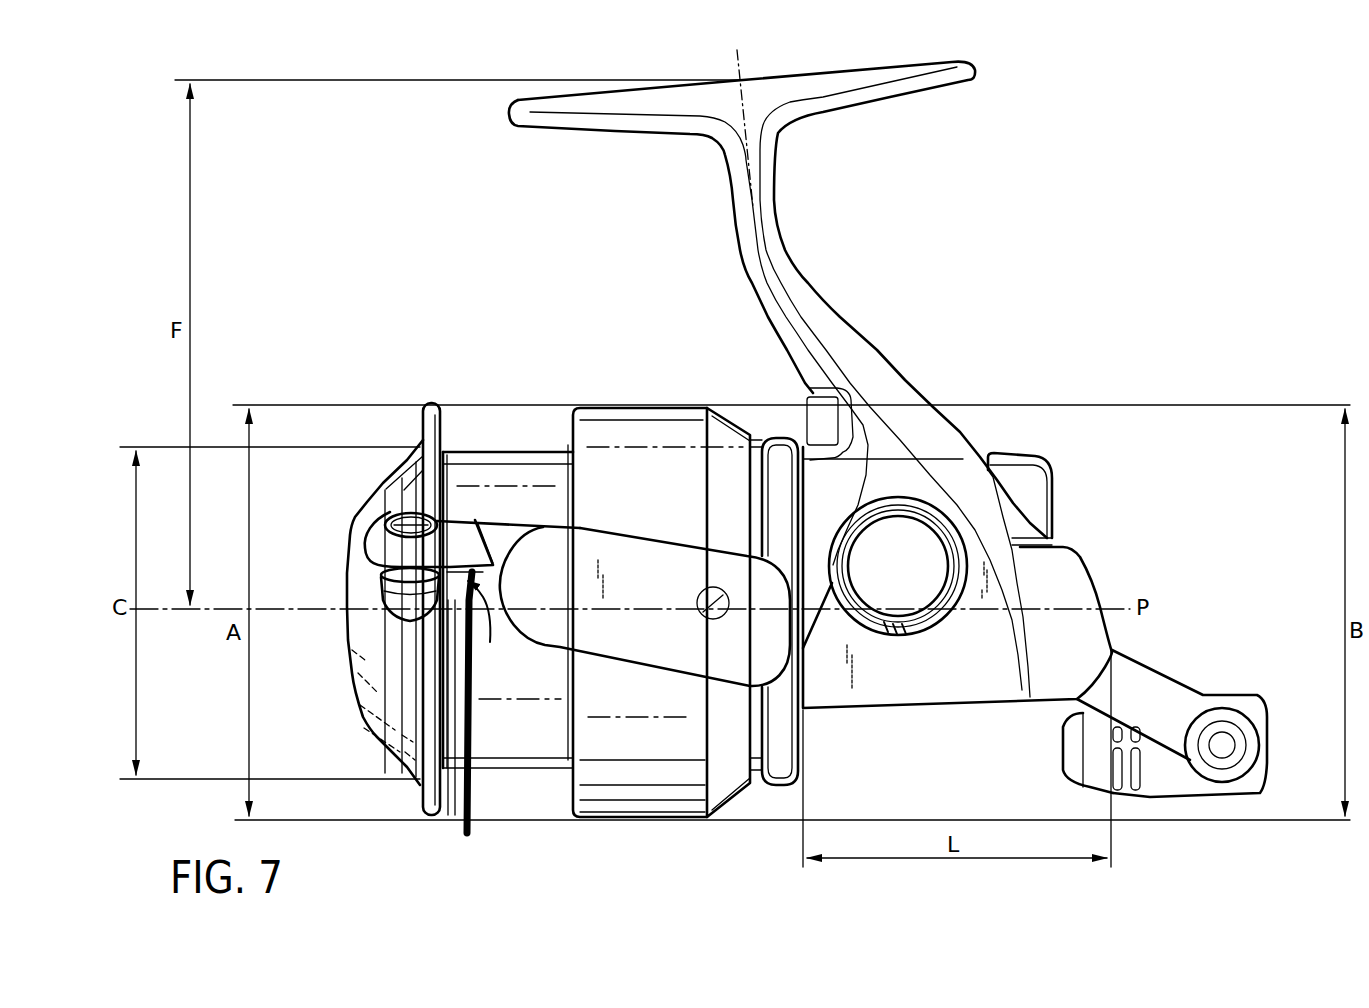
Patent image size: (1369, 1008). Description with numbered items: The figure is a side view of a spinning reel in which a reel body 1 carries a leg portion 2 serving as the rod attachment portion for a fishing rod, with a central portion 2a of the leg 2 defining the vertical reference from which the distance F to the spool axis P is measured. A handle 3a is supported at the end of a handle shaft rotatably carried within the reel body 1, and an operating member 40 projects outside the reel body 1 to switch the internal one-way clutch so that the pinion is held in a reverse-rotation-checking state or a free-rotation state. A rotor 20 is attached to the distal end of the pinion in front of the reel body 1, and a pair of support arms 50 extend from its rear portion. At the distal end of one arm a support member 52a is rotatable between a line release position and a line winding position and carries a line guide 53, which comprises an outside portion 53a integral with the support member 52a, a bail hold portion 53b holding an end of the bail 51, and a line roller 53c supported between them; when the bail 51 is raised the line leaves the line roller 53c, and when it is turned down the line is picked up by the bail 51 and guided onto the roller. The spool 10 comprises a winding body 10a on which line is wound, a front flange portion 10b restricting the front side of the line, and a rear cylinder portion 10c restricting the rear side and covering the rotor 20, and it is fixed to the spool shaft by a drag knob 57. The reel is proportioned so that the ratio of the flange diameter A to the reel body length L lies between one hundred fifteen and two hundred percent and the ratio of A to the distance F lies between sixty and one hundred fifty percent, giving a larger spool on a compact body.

The reel body 1 is at (913, 700).
The leg portion 2 is at (780, 127).
The central portion of the leg 2a is at (745, 78).
The handle 3a is at (1127, 708).
The spool 10 is at (494, 412).
The winding body 10a is at (542, 460).
The front flange portion 10b is at (423, 420).
The rear cylinder portion 10c is at (642, 408).
The rotor 20 is at (757, 787).
The operating member 40 is at (1042, 490).
The support arms 50 is at (638, 657).
The bail 51 is at (476, 818).
The support member 52a is at (502, 527).
The line guide 53 is at (500, 600).
The outside portion 53a is at (362, 545).
The bail hold portion 53b is at (385, 612).
The line roller 53c is at (494, 627).
The drag knob 57 is at (355, 702).